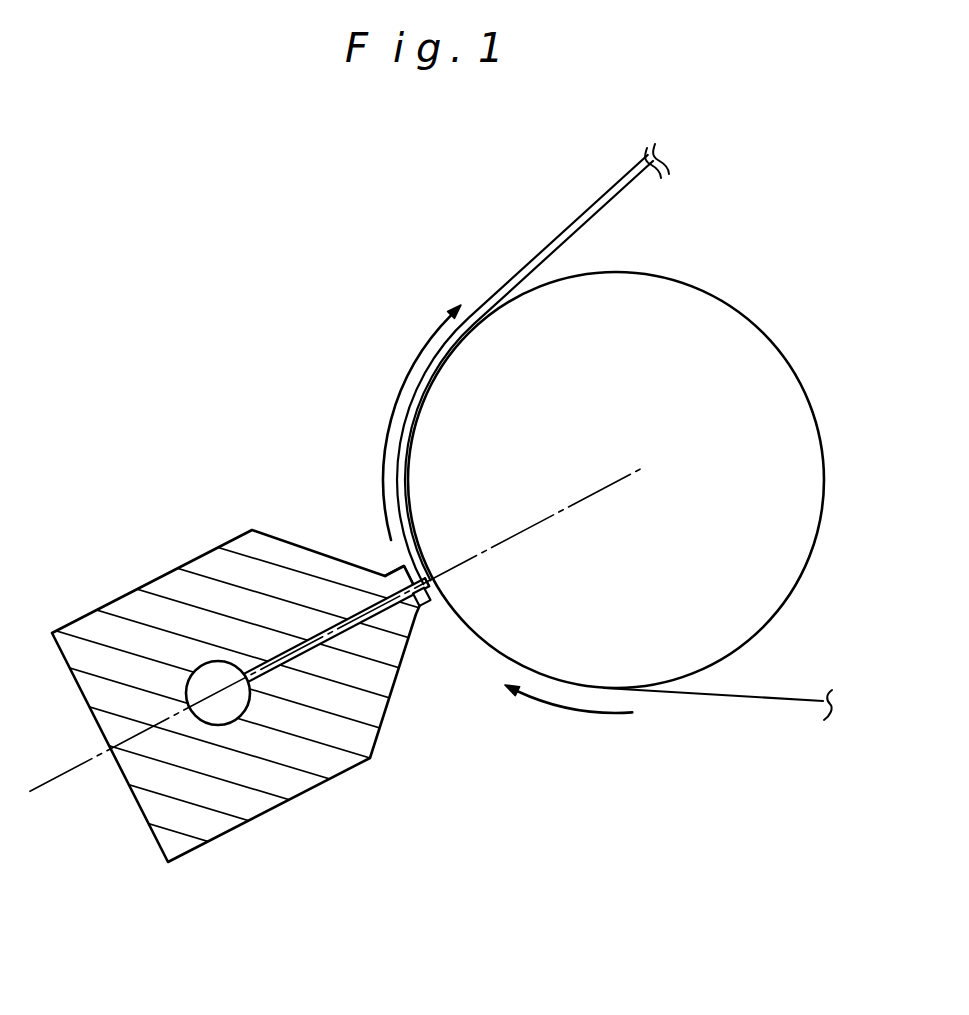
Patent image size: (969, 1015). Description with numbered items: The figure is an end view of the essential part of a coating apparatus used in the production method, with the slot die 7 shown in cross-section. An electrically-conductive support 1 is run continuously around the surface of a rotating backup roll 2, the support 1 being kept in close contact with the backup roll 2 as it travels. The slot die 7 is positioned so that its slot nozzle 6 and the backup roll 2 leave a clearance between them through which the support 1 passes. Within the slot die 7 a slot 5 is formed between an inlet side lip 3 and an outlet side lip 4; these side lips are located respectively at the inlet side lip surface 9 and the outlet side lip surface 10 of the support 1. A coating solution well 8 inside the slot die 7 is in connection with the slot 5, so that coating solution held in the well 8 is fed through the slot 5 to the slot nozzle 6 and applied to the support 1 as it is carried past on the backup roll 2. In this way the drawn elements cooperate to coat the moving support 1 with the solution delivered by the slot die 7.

The electrically-conductive support 1 is at (717, 697).
The backup roll 2 is at (808, 565).
The inlet side lip 3 is at (393, 642).
The outlet side lip 4 is at (344, 582).
The slot 5 is at (340, 632).
The slot nozzle 6 is at (415, 617).
The slot die 7 is at (240, 702).
The coating solution well 8 is at (218, 661).
The inlet side lip surface 9 is at (433, 600).
The outlet side lip surface 10 is at (410, 567).